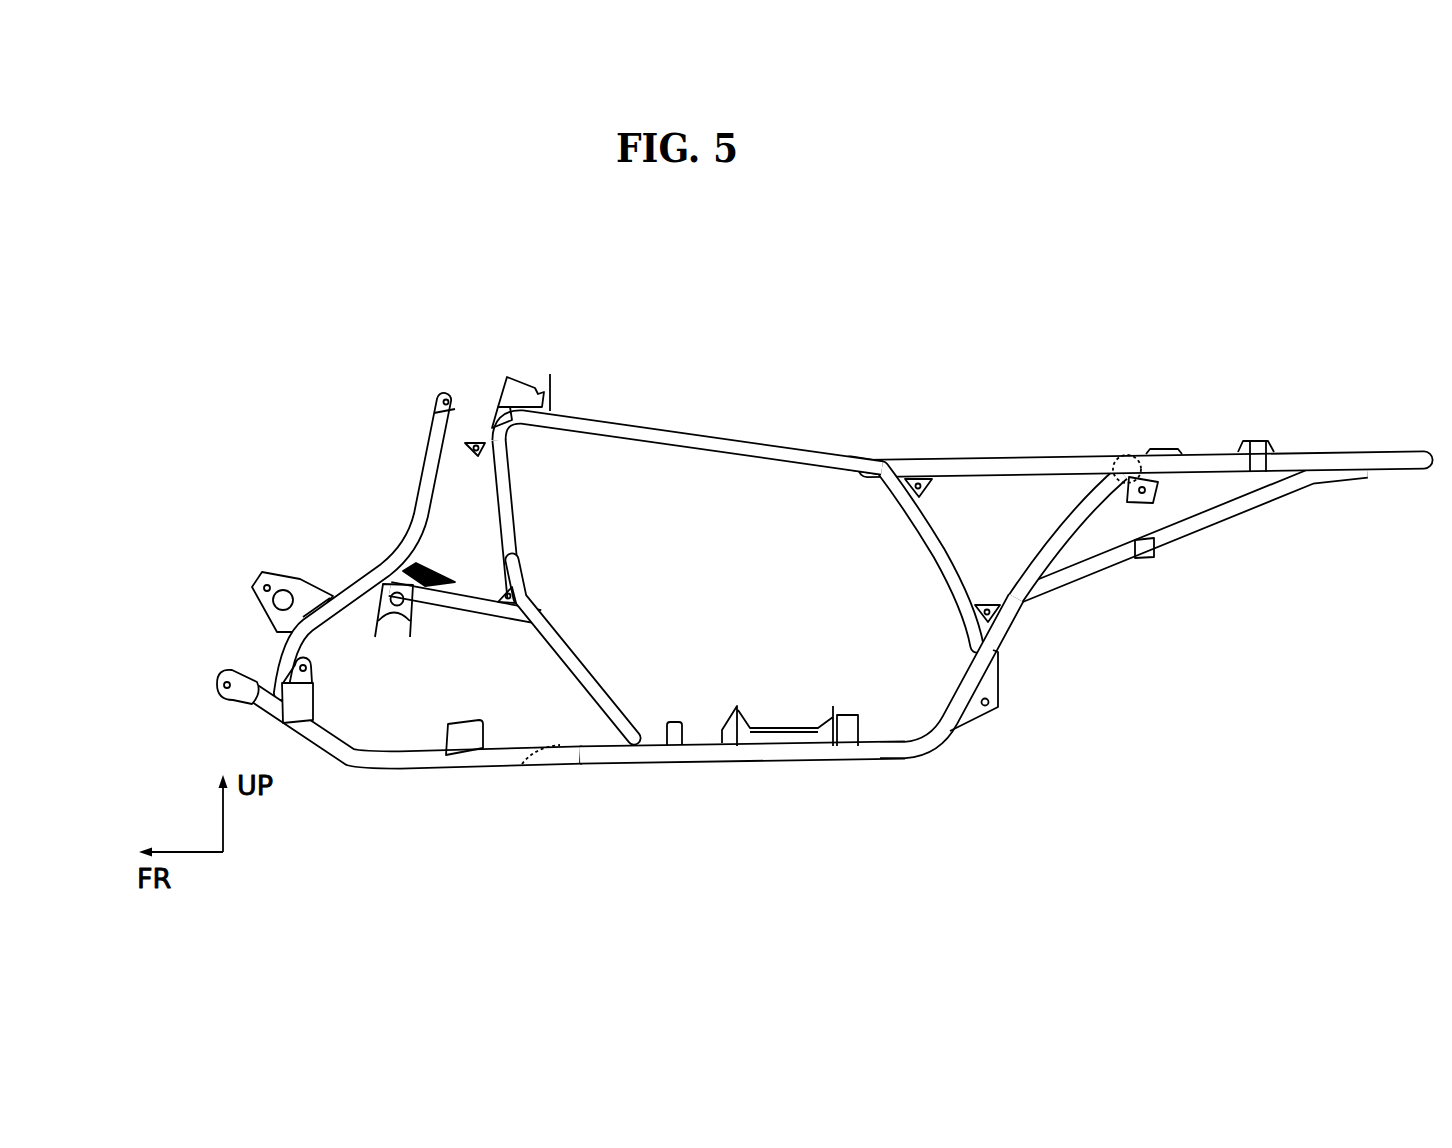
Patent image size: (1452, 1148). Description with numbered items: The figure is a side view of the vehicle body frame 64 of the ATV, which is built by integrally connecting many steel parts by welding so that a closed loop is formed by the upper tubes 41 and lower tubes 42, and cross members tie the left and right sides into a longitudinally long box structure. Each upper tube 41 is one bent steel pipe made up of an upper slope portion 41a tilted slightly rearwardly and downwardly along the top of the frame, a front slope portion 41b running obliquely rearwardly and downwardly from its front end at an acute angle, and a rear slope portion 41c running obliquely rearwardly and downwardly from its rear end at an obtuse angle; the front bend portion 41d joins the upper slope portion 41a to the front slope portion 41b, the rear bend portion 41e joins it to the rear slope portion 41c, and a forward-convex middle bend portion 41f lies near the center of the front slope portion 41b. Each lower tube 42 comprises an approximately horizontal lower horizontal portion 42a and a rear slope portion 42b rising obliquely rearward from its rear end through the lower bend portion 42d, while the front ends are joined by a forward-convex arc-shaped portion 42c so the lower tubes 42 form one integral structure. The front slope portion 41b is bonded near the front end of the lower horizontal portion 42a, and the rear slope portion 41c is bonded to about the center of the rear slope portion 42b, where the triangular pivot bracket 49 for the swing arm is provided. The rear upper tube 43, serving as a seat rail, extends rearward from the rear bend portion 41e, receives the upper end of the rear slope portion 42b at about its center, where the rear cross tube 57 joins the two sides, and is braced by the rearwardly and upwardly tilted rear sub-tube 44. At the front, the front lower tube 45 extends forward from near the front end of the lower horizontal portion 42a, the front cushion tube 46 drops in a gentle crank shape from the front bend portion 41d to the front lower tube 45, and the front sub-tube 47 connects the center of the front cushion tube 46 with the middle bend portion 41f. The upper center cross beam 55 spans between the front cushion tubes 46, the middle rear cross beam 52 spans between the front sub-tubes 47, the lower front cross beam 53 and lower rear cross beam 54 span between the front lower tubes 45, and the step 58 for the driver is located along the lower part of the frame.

The upper tube 41 is at (635, 605).
The upper slope portion 41a is at (796, 443).
The front slope portion 41b is at (521, 532).
The rear slope portion 41c is at (929, 553).
The front bend portion 41d is at (490, 424).
The rear bend portion 41e is at (893, 462).
The middle bend portion 41f is at (541, 601).
The lower tube 42 is at (812, 591).
The lower horizontal portion 42a is at (758, 764).
The rear slope portion 42b is at (1066, 527).
The arc-shaped portion 42c is at (528, 766).
The lower bend portion 42d is at (931, 740).
The rear upper tube 43 is at (1060, 451).
The rear sub-tube 44 is at (1237, 517).
The front lower tube 45 is at (380, 771).
The front cushion tube 46 is at (414, 504).
The front sub-tube 47 is at (483, 620).
The pivot bracket 49 is at (1003, 682).
The middle rear cross beam 52 is at (408, 629).
The lower front cross beam 53 is at (315, 699).
The lower rear cross beam 54 is at (444, 732).
The upper center cross beam 55 is at (426, 428).
The rear cross tube 57 is at (1125, 457).
The step 58 is at (853, 712).
The vehicle body frame 64 is at (992, 326).